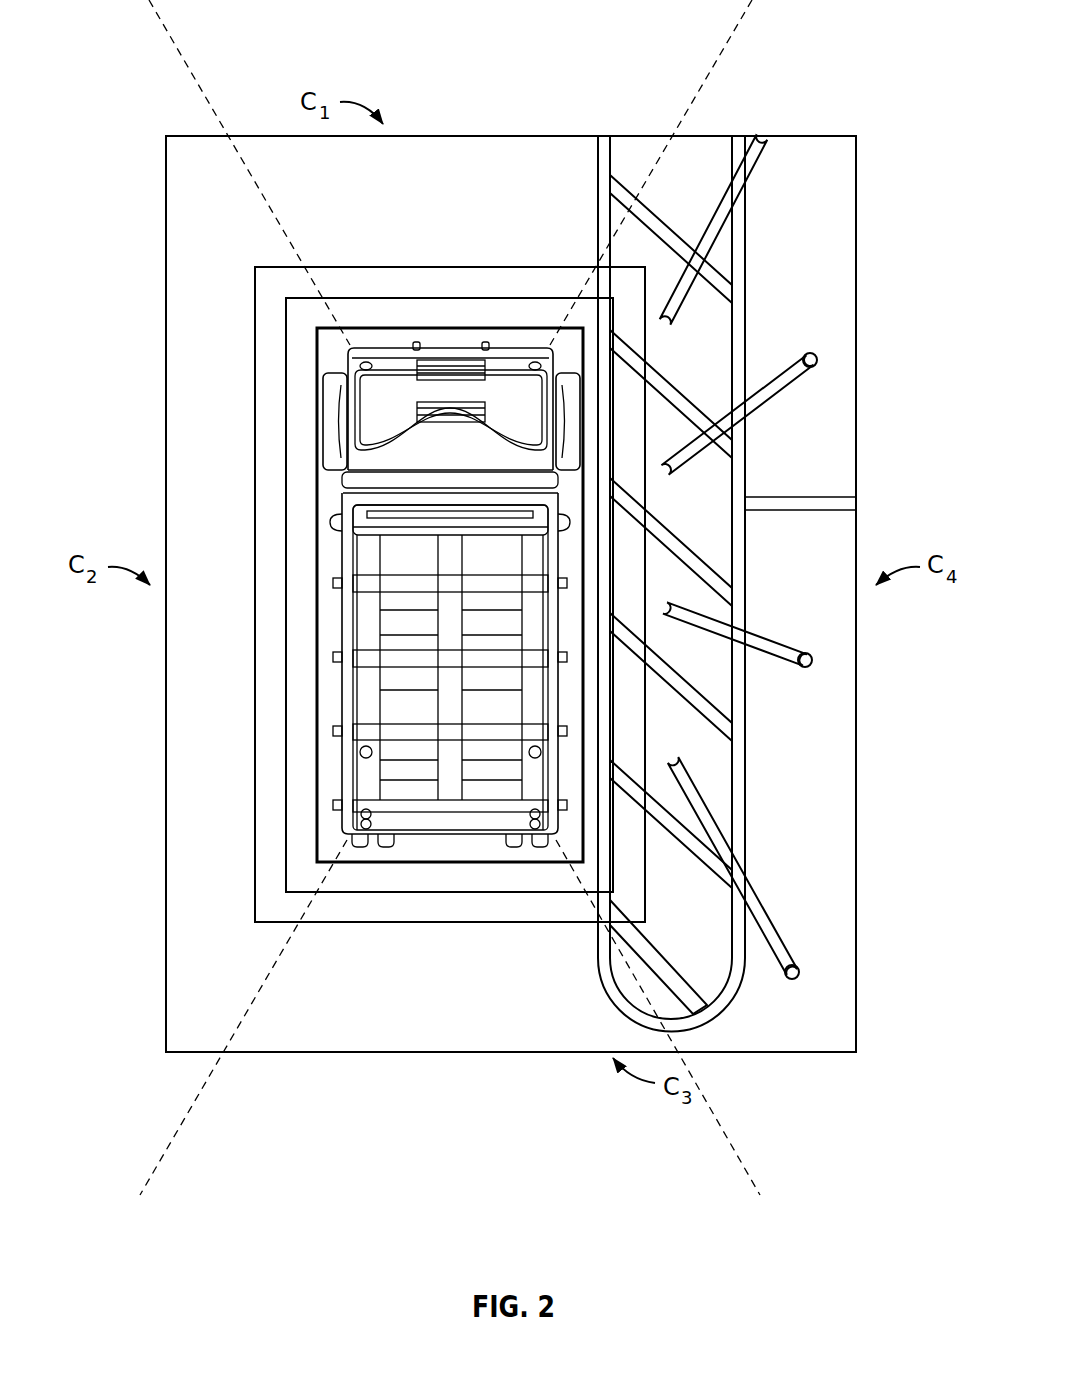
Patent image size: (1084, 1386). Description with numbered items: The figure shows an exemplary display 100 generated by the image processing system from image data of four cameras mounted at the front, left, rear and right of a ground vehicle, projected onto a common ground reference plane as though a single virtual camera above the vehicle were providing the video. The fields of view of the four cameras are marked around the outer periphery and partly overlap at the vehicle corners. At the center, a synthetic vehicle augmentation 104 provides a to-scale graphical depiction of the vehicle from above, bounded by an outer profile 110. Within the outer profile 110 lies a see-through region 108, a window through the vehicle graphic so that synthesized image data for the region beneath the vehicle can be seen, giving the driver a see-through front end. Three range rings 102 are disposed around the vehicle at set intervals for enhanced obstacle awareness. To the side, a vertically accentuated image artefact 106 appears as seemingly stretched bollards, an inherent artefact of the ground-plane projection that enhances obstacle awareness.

The display 100 is at (175, 95).
The range rings 102 is at (392, 862).
The synthetic vehicle augmentation 104 is at (456, 648).
The vertically accentuated image artefact 106 is at (765, 920).
The see-through region 108 is at (503, 230).
The outer profile 110 is at (349, 834).